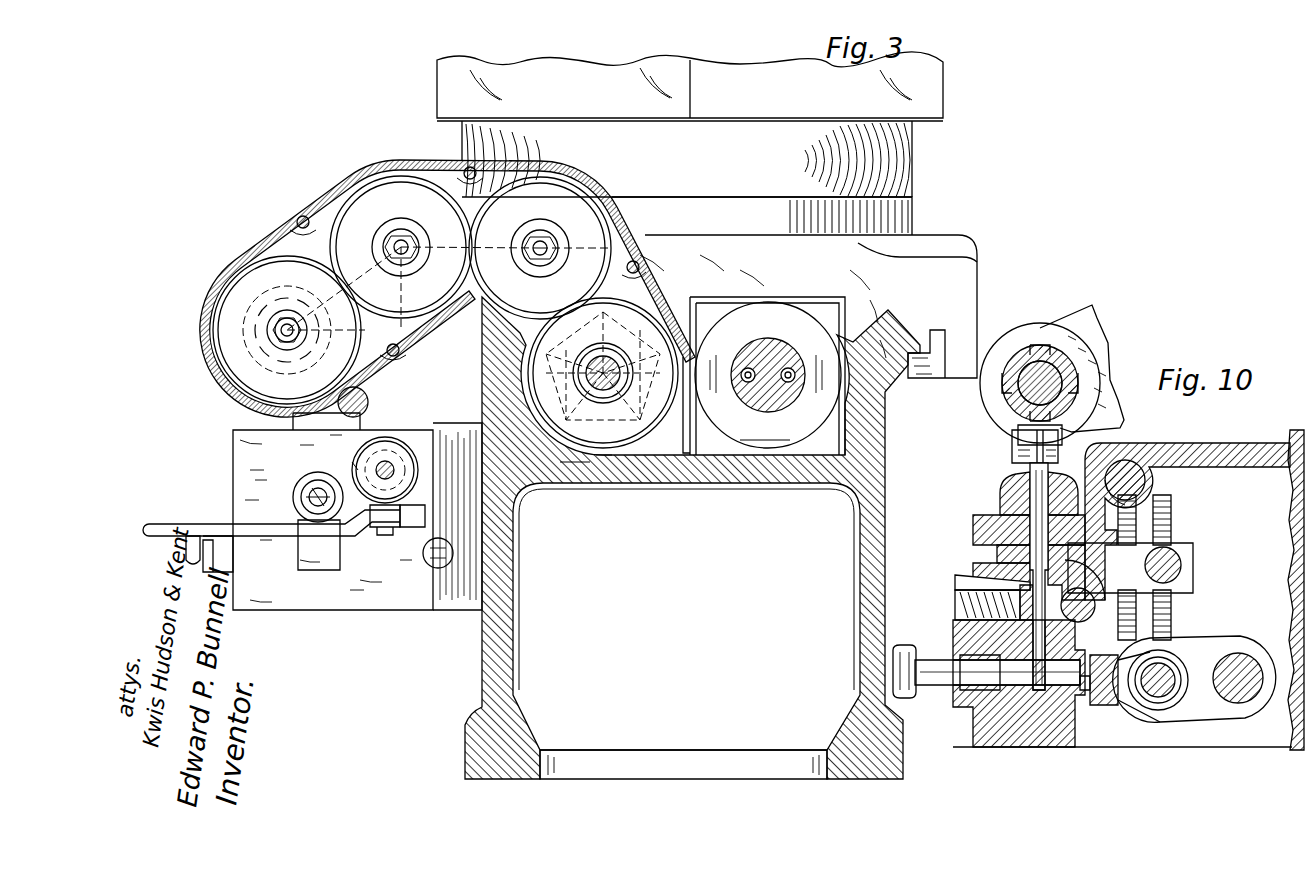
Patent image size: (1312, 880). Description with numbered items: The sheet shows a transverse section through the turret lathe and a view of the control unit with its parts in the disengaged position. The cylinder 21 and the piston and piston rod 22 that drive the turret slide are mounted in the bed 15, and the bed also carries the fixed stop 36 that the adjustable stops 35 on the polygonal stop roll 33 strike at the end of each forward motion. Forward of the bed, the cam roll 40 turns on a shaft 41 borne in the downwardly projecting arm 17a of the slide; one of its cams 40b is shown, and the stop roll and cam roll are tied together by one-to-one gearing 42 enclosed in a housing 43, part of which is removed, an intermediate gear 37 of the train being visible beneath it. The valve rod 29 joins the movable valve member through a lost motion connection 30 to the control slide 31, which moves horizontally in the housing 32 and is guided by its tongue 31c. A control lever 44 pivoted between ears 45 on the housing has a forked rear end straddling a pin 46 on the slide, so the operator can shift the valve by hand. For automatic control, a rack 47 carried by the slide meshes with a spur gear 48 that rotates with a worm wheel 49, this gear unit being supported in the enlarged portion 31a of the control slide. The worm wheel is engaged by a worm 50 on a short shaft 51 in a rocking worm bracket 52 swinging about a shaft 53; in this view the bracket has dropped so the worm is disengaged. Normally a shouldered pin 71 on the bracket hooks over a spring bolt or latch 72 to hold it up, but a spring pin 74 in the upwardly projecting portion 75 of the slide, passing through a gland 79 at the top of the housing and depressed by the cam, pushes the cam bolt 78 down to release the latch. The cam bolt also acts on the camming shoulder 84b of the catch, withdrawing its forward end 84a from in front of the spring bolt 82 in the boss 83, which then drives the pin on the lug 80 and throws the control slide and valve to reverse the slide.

In FIG. 3, the bed 15 is at (878, 447).
In FIG. 3, the cylinder 21 is at (760, 440).
In FIG. 3, the piston and piston rod 22 is at (792, 352).
In FIG. 3, the valve rod 29 is at (392, 462).
In FIG. 3, the lost motion connection 30 is at (352, 462).
In FIG. 3, the housing 32 is at (330, 598).
In FIG. 10, the housing 32 is at (1133, 748).
In FIG. 3, the stop roll 33 is at (572, 470).
In FIG. 3, the stops 35 is at (604, 462).
In FIG. 3, the fixed stop 36 is at (680, 432).
In FIG. 3, the intermediate gear 37 is at (611, 357).
In FIG. 3, the shaft 41 is at (275, 340).
In FIG. 10, the shaft 41 is at (1010, 392).
In FIG. 3, the gearing 42 is at (378, 164).
In FIG. 3, the housing 43 is at (277, 230).
In FIG. 3, the control lever 44 is at (183, 524).
In FIG. 3, the ears 45 is at (305, 550).
In FIG. 3, the pin 46 is at (385, 527).
In FIG. 3, the rack 47 is at (368, 402).
In FIG. 10, the rack 47 is at (1135, 460).
In FIG. 3, the shaft 53 is at (426, 560).
In FIG. 10, the shaft 53 is at (1242, 655).
In FIG. 3, the boss or barrel 83 is at (310, 486).
In FIG. 10, the downwardly projecting arm 17a is at (1068, 330).
In FIG. 10, the cam roll 40 is at (1038, 345).
In FIG. 10, the cam 40b is at (1014, 450).
In FIG. 10, the spring pin 74 is at (1052, 468).
In FIG. 10, the gland nut 79 is at (1008, 500).
In FIG. 10, the worm wheel 49 is at (1160, 522).
In FIG. 10, the spur gear 48 is at (1120, 606).
In FIG. 10, the control slide 31 is at (1175, 572).
In FIG. 10, the enlarged portion 31a is at (1190, 545).
In FIG. 10, the guide plate or tongue 31c is at (997, 552).
In FIG. 10, the forward end of catch 84a is at (1076, 570).
In FIG. 10, the camming shoulder 84b is at (1005, 580).
In FIG. 10, the spring bolt 82 is at (1090, 588).
In FIG. 10, the downwardly projecting lug 80 is at (1092, 598).
In FIG. 10, the upwardly projecting portion 75 is at (905, 650).
In FIG. 10, the cam bolt 78 is at (1040, 648).
In FIG. 10, the shouldered pin 71 is at (1095, 655).
In FIG. 10, the spring bolt or latch 72 is at (1078, 700).
In FIG. 10, the worm 50 is at (1168, 662).
In FIG. 10, the short shaft 51 is at (1165, 690).
In FIG. 10, the rocking worm bracket 52 is at (1218, 710).